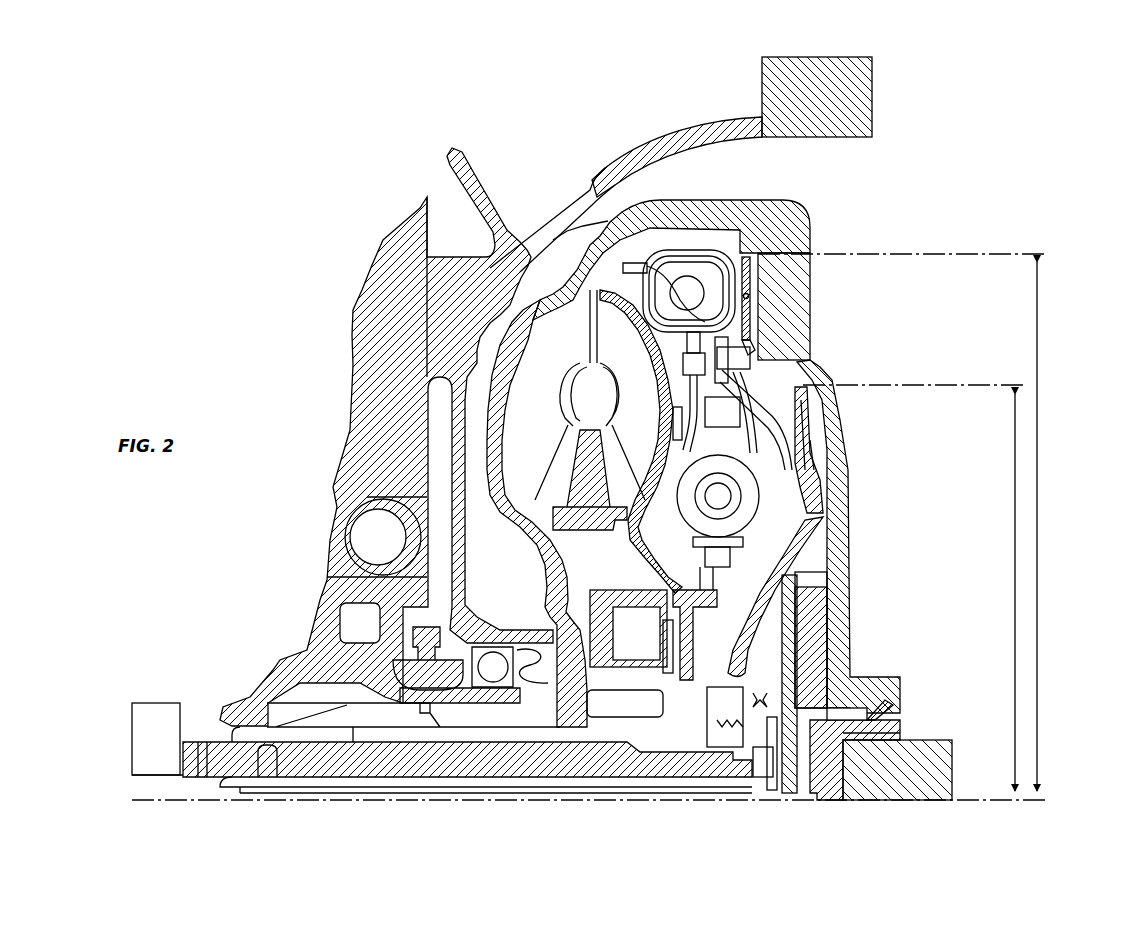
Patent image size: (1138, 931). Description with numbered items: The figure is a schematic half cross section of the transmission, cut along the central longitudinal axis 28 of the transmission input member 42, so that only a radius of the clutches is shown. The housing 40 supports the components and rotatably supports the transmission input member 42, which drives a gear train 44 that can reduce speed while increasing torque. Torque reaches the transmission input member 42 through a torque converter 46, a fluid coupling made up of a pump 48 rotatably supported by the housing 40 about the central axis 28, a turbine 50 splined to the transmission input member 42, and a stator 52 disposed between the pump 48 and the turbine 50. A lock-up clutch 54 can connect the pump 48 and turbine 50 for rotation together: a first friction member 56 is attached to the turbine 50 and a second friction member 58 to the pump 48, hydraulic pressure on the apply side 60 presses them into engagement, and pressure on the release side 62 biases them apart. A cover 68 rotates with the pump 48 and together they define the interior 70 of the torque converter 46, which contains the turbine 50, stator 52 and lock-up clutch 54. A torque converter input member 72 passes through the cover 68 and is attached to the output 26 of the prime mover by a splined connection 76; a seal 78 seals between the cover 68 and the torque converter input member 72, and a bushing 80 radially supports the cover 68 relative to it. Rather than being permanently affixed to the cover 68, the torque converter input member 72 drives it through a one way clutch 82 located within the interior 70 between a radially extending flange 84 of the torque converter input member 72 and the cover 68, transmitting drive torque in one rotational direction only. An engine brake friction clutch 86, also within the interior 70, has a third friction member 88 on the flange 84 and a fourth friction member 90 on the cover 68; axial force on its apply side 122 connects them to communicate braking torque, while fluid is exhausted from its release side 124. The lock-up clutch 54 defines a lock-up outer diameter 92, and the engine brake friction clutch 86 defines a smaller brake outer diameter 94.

The output 26 is at (947, 762).
The central longitudinal axis 28 is at (1013, 800).
The housing 40 is at (800, 72).
The transmission input member 42 is at (498, 767).
The gear train 44 is at (150, 712).
The torque converter 46 is at (608, 219).
The pump 48 is at (552, 302).
The turbine 50 is at (632, 326).
The stator 52 is at (573, 477).
The lock-up clutch 54 is at (742, 258).
The first friction member 56 is at (758, 283).
The second friction member 58 is at (750, 296).
The apply side 60 is at (690, 341).
The release side 62 is at (756, 419).
The cover 68 is at (795, 330).
The interior 70 is at (780, 563).
The torque converter input member 72 is at (823, 780).
The splined connection 76 is at (900, 735).
The seal 78 is at (888, 710).
The bushing 80 is at (847, 712).
The one way clutch 82 is at (818, 605).
The flange 84 is at (790, 727).
The engine brake friction clutch 86 is at (820, 404).
The third friction member 88 is at (812, 437).
The fourth friction member 90 is at (817, 457).
The lock-up outer diameter 92 is at (1040, 588).
The brake outer diameter 94 is at (1020, 667).
The apply side 122 is at (682, 690).
The release side 124 is at (811, 638).